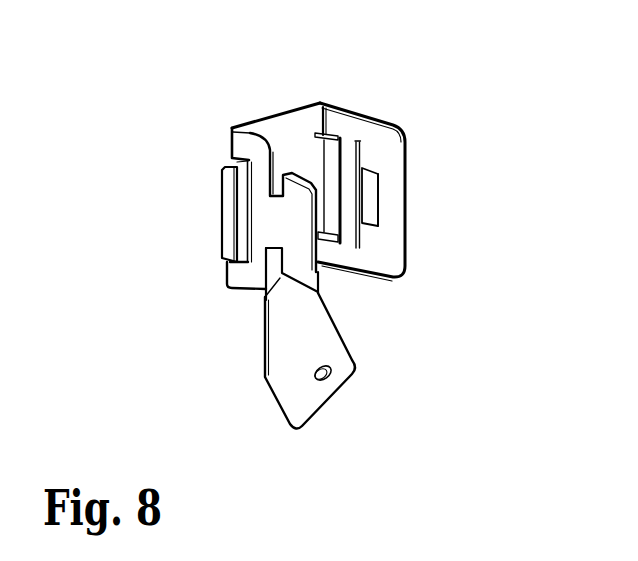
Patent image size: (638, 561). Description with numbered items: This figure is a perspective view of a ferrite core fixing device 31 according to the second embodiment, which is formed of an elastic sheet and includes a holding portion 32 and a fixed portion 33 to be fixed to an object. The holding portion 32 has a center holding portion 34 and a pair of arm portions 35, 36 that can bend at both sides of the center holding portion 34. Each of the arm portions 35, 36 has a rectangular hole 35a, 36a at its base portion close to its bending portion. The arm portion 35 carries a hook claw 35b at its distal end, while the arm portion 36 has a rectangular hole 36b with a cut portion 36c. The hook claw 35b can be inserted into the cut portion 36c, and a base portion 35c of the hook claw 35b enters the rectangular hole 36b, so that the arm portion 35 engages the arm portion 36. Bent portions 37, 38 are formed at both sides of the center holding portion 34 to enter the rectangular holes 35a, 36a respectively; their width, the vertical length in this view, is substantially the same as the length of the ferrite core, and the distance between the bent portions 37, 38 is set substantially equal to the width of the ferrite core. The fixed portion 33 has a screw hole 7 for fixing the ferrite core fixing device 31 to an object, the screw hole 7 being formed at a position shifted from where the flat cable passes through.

The screw hole 7 is at (332, 378).
The ferrite core fixing device 31 is at (440, 288).
The holding portion 32 is at (203, 101).
The fixed portion 33 is at (286, 402).
The center holding portion 34 is at (292, 124).
The arm portion 35 is at (251, 130).
The rectangular hole 35a is at (250, 217).
The hook claw 35b is at (297, 242).
The base portion 35c is at (282, 234).
The arm portion 36 is at (372, 113).
The rectangular hole 36a is at (335, 132).
The rectangular hole 36b is at (367, 198).
The cut portion 36c is at (356, 148).
The bent portion 37 is at (220, 179).
The bent portion 38 is at (335, 164).